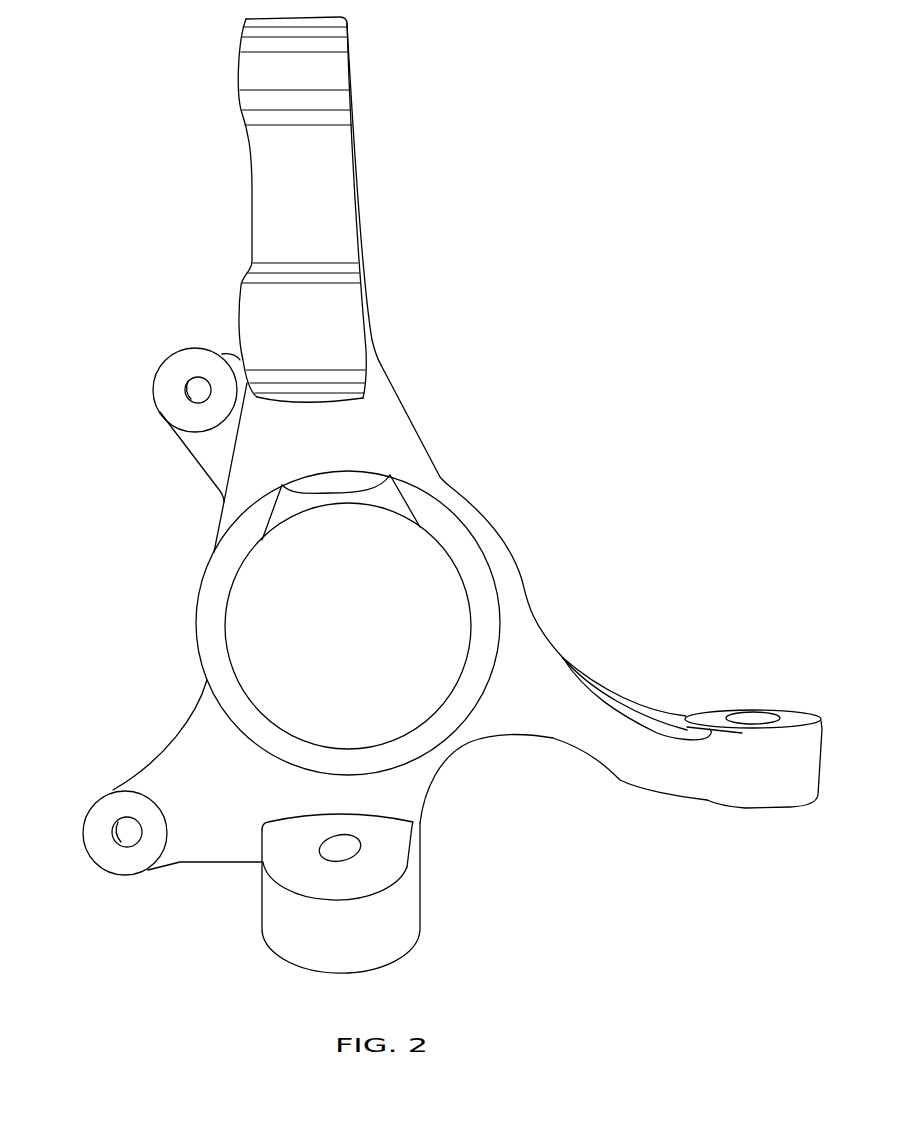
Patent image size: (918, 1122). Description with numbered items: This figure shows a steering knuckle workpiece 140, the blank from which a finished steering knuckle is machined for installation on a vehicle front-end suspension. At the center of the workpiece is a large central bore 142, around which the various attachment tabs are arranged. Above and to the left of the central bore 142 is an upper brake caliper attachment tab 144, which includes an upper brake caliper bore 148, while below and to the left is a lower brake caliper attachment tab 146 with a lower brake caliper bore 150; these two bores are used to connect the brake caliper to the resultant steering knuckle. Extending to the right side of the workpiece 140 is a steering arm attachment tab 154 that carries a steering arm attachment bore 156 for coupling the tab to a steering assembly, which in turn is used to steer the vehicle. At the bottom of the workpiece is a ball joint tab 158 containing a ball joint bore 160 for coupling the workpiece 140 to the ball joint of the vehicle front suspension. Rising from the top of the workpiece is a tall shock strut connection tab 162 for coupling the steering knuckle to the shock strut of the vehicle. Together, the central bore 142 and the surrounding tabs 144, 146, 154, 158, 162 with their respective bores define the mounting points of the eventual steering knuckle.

The steering knuckle workpiece 140 is at (623, 348).
The central bore 142 is at (247, 603).
The upper brake caliper attachment tab 144 is at (177, 370).
The lower brake caliper attachment tab 146 is at (127, 867).
The upper brake caliper bore 148 is at (178, 393).
The lower brake caliper bore 150 is at (120, 837).
The steering arm attachment tab 154 is at (752, 792).
The steering arm attachment bore 156 is at (753, 723).
The ball joint tab 158 is at (402, 932).
The ball joint bore 160 is at (332, 848).
The shock strut connection tab 162 is at (265, 207).